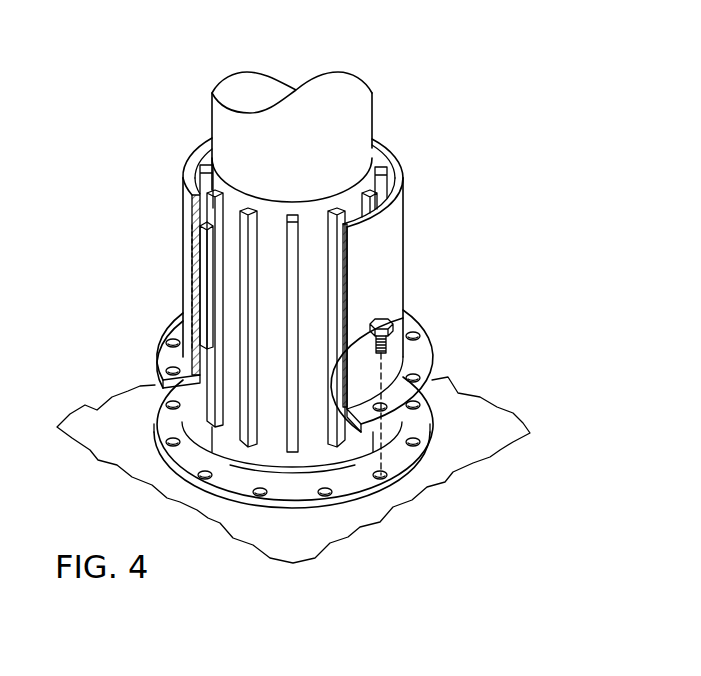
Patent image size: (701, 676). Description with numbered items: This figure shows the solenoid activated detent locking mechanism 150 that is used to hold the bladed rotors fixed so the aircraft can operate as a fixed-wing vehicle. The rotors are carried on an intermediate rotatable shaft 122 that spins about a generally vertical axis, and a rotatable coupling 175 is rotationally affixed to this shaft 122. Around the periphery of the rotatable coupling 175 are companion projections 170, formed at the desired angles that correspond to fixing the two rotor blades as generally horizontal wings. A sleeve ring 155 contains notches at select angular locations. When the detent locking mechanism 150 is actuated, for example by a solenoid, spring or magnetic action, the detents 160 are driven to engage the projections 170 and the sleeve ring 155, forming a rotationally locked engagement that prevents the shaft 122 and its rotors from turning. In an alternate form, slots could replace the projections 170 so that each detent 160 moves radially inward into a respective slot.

The rotatable shaft 122 is at (213, 118).
The detent locking mechanism 150 is at (478, 241).
The sleeve ring 155 is at (249, 456).
The detent 160 is at (184, 270).
The projections 170 is at (249, 206).
The rotatable coupling 175 is at (368, 183).